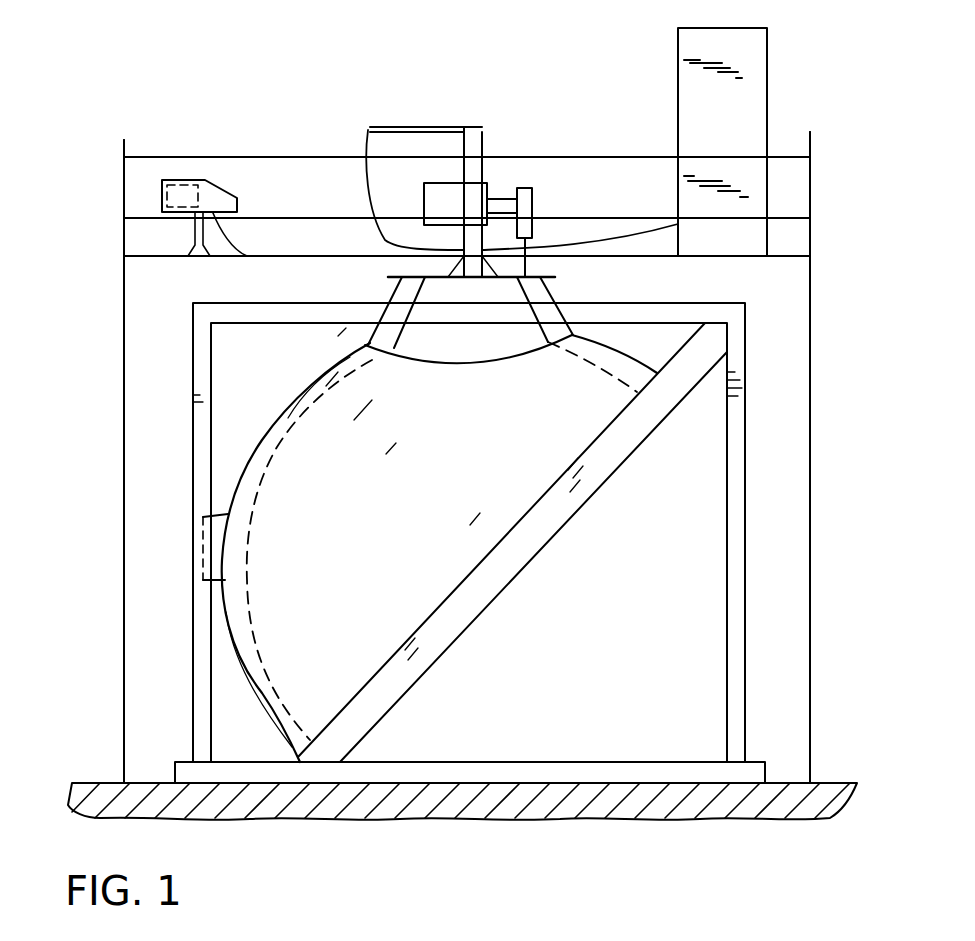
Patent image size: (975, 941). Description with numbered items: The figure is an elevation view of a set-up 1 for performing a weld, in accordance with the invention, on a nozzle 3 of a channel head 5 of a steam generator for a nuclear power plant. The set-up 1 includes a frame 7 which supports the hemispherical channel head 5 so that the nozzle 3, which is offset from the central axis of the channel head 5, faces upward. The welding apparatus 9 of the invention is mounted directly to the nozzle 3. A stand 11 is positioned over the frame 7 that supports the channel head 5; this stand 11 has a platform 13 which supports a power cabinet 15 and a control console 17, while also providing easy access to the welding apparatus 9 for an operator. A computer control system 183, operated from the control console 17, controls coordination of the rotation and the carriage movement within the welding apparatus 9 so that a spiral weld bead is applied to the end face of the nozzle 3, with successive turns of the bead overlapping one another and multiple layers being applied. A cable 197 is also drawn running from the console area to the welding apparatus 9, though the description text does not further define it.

The set-up 1 is at (190, 58).
The nozzle 3 is at (542, 290).
The channel head 5 is at (300, 467).
The frame 7 is at (745, 462).
The welding apparatus 9 is at (498, 182).
The stand 11 is at (812, 307).
The platform 13 is at (150, 256).
The power cabinet 15 is at (740, 108).
The control console 17 is at (195, 181).
The computer control system 183 is at (160, 188).
The cable 197 is at (370, 127).